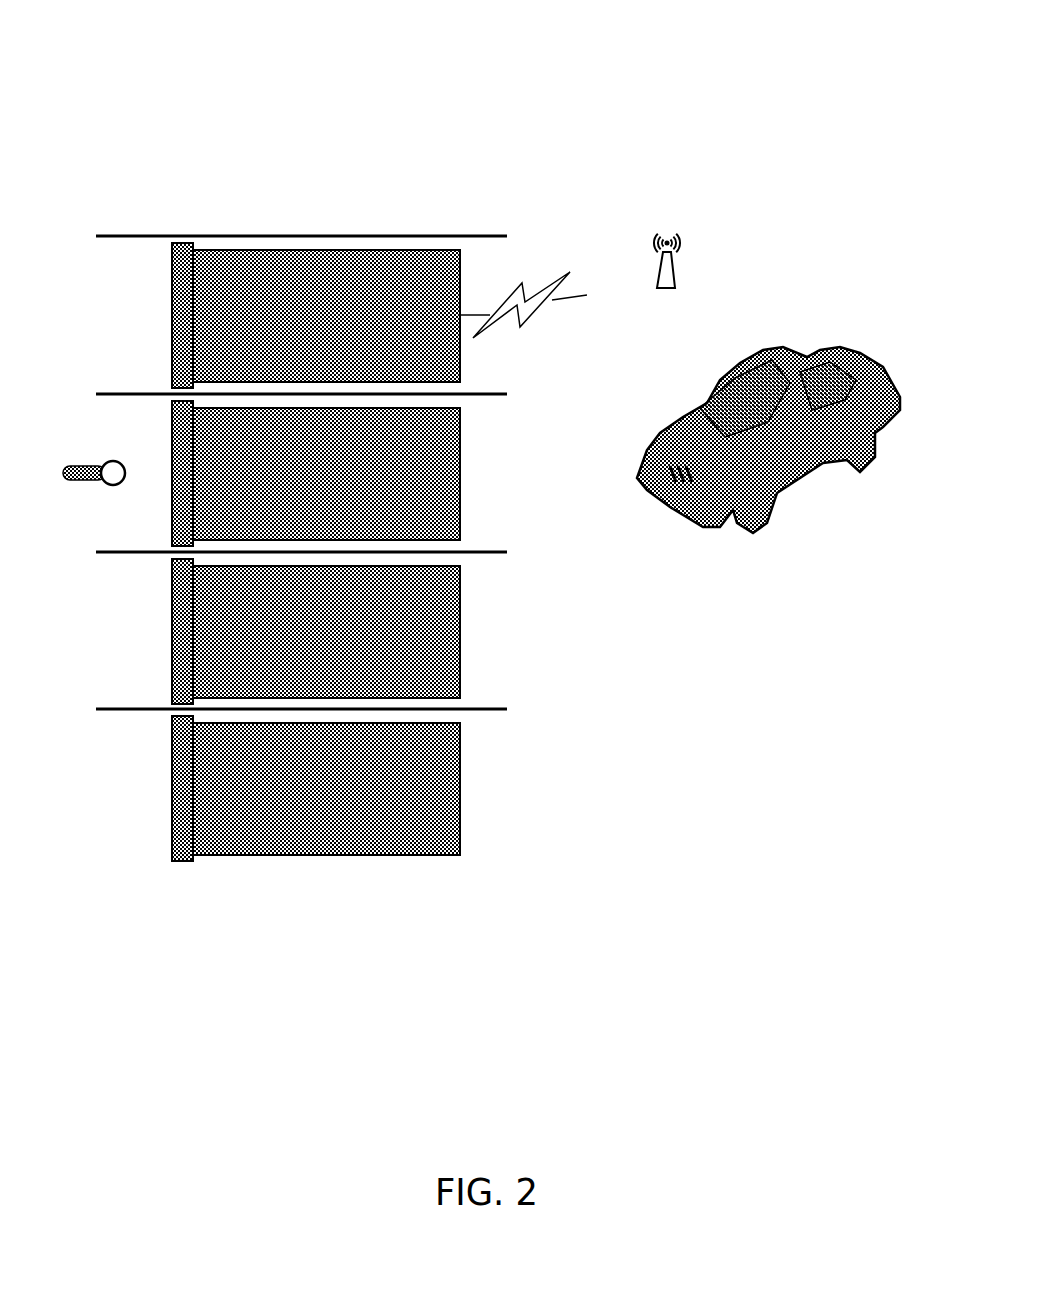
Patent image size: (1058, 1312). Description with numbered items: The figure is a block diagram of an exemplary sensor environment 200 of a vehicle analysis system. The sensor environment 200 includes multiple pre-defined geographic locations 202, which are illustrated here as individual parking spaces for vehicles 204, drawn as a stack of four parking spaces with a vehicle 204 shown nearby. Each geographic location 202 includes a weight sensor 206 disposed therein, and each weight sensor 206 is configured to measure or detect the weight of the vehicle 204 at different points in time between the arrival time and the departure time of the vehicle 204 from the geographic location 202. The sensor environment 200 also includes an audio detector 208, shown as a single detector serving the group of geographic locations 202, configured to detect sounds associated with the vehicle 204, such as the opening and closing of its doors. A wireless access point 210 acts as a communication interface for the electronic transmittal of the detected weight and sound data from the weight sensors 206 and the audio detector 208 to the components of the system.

The sensor environment 200 is at (493, 60).
The pre-defined geographic location 202 is at (276, 513).
The vehicle 204 is at (768, 348).
The weight sensor 206 is at (272, 288).
The audio detector 208 is at (90, 465).
The wireless access point 210 is at (673, 273).